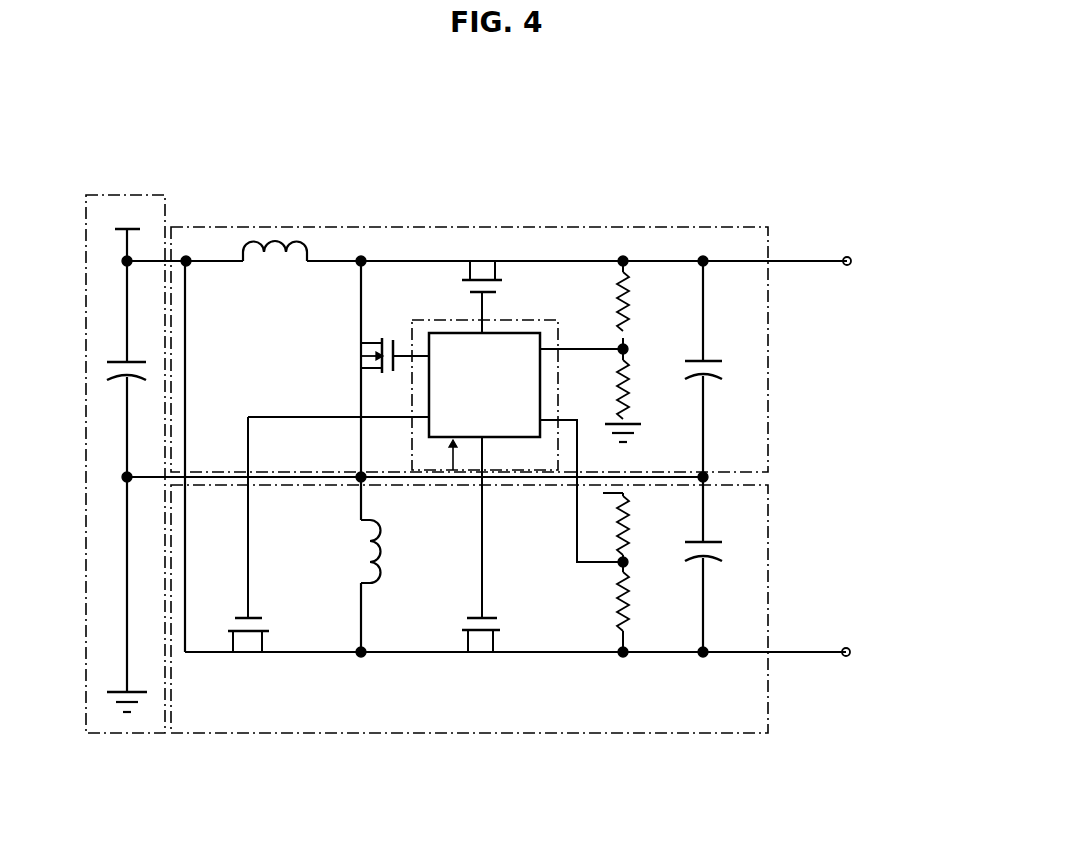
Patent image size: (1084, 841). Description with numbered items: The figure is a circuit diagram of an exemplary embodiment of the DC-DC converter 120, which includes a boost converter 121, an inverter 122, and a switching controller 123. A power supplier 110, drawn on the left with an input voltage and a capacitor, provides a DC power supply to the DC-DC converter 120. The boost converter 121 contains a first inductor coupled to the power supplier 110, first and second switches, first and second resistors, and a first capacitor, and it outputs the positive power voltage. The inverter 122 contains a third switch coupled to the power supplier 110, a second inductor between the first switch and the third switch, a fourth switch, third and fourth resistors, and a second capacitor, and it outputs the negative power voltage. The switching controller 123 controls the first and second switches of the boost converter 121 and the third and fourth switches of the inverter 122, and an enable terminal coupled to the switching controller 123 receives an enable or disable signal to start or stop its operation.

The power supplier 110 is at (166, 196).
The DC-DC converter 120 is at (521, 411).
The boost converter 121 is at (521, 362).
The inverter 122 is at (768, 522).
The switching controller 123 is at (500, 438).